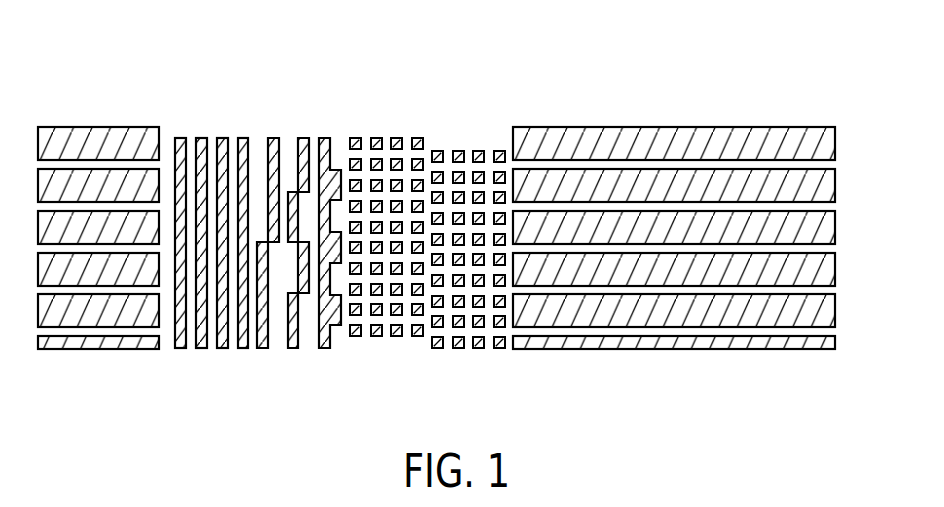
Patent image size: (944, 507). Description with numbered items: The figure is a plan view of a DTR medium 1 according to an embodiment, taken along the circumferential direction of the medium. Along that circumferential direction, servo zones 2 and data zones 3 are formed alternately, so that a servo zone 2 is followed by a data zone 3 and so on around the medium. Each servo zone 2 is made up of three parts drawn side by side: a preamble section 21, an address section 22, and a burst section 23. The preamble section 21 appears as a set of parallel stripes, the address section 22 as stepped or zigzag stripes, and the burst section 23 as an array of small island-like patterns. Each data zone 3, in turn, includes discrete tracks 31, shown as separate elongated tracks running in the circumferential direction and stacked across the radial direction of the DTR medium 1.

The DTR medium 1 is at (157, 92).
The servo zone 2 is at (176, 115).
The preamble section 21 is at (247, 363).
The address section 22 is at (255, 363).
The burst section 23 is at (503, 363).
The data zone 3 is at (513, 115).
The discrete track 31 is at (836, 140).